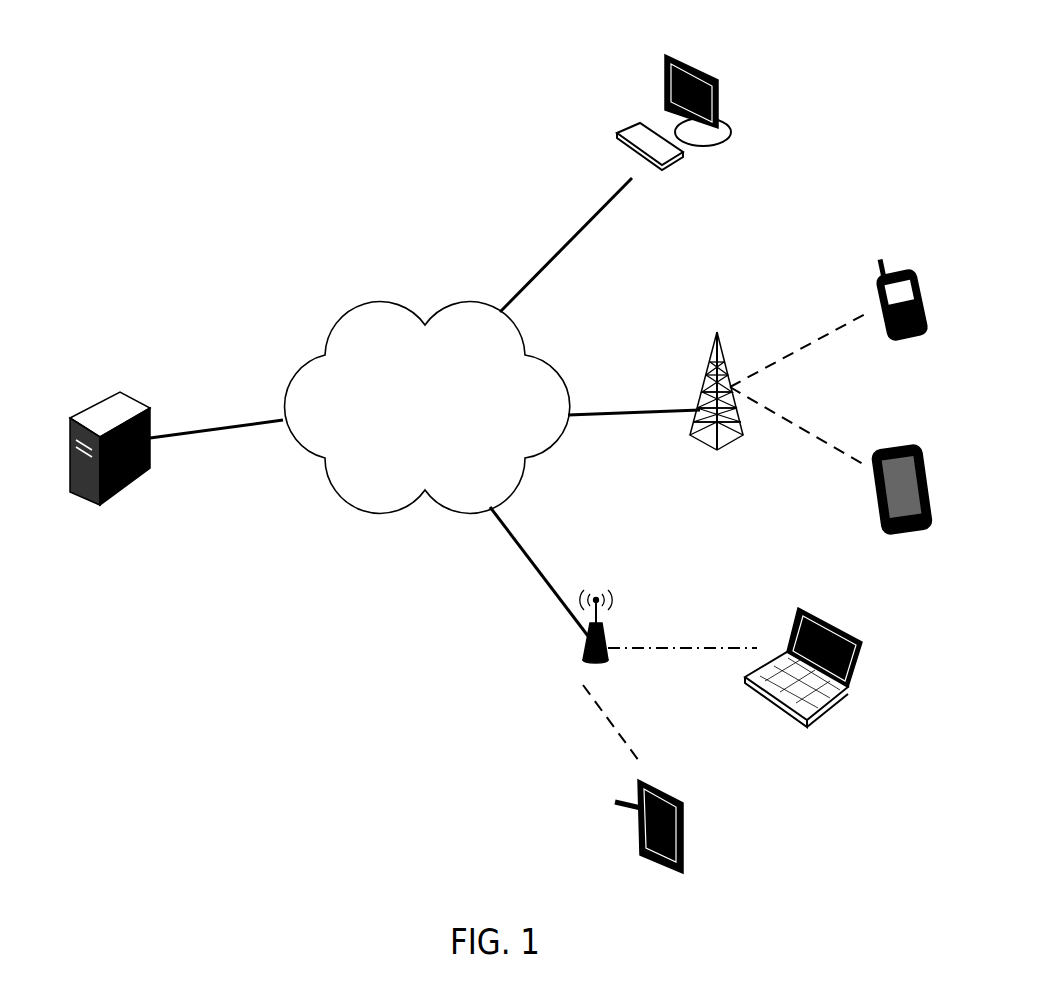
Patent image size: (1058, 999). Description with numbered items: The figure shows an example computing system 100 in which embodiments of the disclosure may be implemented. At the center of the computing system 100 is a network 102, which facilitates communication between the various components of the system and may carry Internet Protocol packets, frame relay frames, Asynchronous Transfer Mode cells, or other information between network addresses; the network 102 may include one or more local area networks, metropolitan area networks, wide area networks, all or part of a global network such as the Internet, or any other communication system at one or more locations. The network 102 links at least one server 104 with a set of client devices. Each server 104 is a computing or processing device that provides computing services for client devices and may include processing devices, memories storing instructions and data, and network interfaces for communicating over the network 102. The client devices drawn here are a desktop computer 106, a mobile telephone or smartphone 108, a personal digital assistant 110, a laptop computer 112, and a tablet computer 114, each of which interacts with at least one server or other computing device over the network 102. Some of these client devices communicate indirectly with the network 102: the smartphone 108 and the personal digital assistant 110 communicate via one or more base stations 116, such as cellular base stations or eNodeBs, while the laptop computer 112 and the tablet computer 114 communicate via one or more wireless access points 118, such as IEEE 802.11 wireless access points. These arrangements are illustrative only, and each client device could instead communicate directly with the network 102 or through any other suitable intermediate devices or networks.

The computing system 100 is at (264, 90).
The network 102 is at (333, 315).
The server 104 is at (82, 408).
The desktop computer 106 is at (664, 60).
The mobile telephone or smartphone 108 is at (922, 282).
The personal digital assistant (PDA) 110 is at (917, 458).
The laptop computer 112 is at (862, 653).
The tablet computer 114 is at (690, 818).
The base station 116 is at (742, 433).
The wireless access point 118 is at (605, 636).